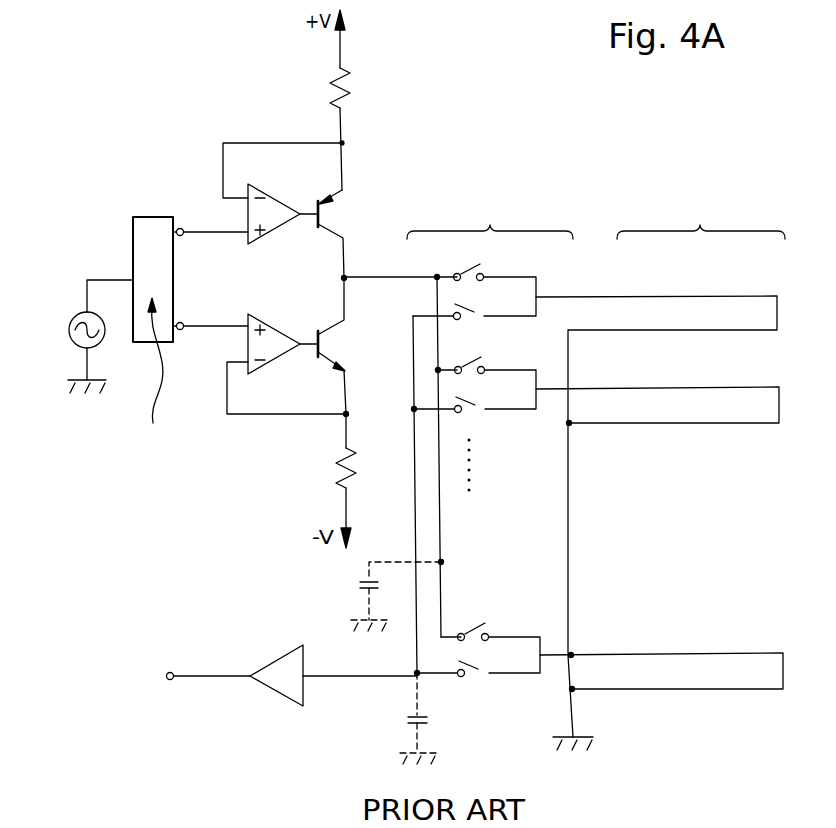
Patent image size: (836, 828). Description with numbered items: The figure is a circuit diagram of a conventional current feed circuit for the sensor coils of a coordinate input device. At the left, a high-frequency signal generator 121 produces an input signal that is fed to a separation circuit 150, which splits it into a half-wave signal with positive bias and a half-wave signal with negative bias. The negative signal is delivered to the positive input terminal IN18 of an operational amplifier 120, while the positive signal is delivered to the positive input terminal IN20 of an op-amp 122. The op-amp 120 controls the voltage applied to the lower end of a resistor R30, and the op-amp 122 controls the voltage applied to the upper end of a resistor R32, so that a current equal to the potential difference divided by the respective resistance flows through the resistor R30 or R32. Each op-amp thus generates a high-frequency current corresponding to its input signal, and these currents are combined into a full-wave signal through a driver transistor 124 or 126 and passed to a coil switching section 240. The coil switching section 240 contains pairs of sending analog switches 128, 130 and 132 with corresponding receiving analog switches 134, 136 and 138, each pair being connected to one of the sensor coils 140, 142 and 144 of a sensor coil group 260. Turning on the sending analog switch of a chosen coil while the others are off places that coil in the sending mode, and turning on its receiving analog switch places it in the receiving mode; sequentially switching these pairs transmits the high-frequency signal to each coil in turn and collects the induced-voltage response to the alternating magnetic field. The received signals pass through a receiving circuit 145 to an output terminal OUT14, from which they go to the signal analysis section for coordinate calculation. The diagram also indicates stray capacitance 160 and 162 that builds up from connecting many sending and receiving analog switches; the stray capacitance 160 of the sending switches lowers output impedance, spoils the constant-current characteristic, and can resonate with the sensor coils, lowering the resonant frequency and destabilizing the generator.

The high-frequency signal generator 121 is at (68, 336).
The separation circuit 150 is at (152, 217).
The positive input terminal of operational amplifier 120 IN18 is at (213, 246).
The positive input terminal of op-amp 122 IN20 is at (213, 314).
The operational amplifier 120 is at (283, 228).
The op-amp 122 is at (284, 353).
The driver transistor 124 is at (331, 232).
The driver transistor 126 is at (331, 362).
The resistor R30 is at (330, 90).
The resistor R32 is at (336, 472).
The coil switching section 240 is at (490, 221).
The sensor coil group 260 is at (701, 221).
The sending analog switch 128 is at (469, 278).
The receiving analog switch 134 is at (469, 317).
The sending analog switch 130 is at (470, 371).
The receiving analog switch 136 is at (470, 410).
The sending analog switch 132 is at (474, 638).
The receiving analog switch 138 is at (474, 674).
The sensor coil 140 is at (765, 296).
The sensor coil 142 is at (767, 388).
The sensor coil 144 is at (768, 653).
The stray capacitance 160 is at (358, 583).
The stray capacitance 162 is at (405, 719).
The receiving circuit 145 is at (278, 694).
The output terminal OUT14 is at (209, 691).